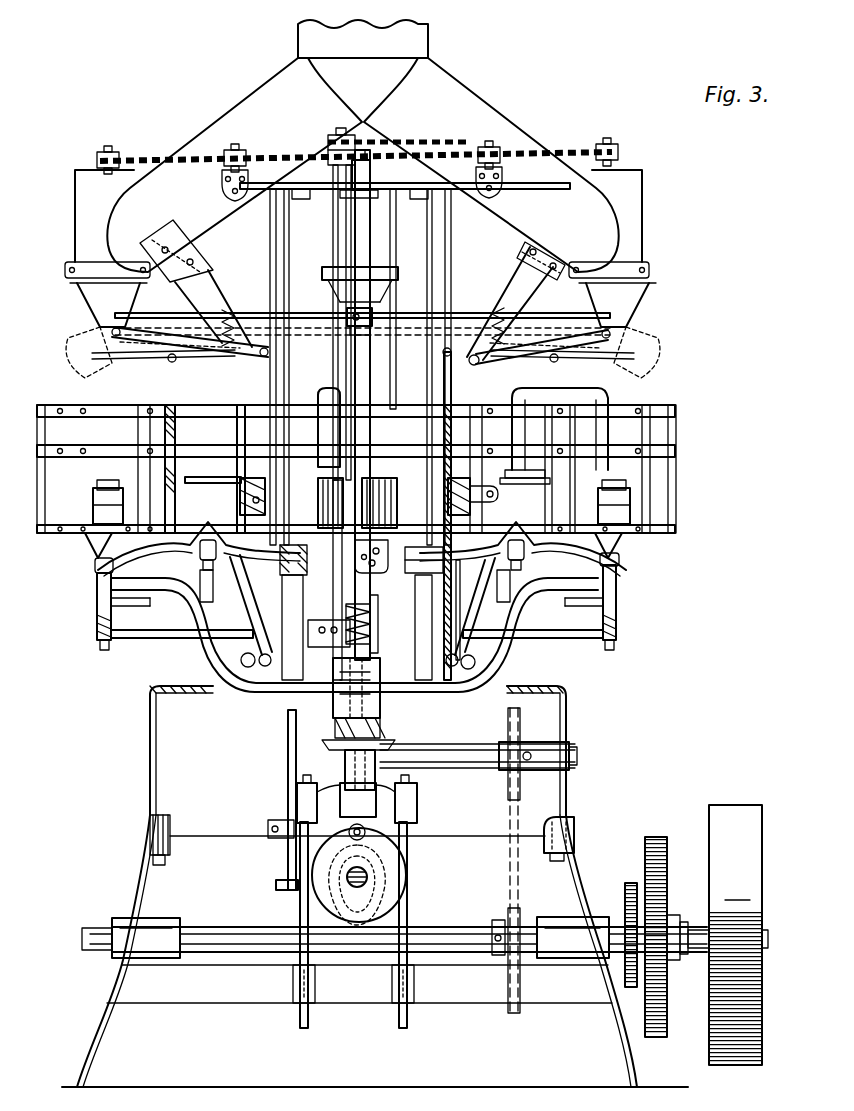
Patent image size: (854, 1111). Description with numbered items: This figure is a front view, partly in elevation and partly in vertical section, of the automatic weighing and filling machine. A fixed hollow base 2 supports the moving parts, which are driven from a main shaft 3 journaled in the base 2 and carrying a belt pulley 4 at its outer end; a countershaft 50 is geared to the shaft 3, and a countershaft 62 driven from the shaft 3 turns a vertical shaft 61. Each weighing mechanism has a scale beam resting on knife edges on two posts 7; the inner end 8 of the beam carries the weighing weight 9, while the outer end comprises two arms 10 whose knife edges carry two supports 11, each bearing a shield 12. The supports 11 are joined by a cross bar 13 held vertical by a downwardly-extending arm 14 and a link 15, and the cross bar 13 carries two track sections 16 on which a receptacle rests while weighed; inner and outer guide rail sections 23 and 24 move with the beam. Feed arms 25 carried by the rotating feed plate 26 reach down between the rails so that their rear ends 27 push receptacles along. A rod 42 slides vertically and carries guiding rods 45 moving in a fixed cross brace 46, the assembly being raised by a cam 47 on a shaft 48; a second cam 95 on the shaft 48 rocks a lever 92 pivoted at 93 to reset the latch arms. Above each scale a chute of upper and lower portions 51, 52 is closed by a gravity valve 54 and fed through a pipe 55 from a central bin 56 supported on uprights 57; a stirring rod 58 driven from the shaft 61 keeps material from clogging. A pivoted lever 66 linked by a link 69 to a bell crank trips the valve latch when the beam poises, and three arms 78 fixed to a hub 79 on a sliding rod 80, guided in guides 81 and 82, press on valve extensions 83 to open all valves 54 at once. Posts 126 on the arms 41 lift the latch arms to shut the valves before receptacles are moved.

The base 2 is at (570, 842).
The shaft 3 is at (452, 926).
The belt pulley 4 is at (738, 848).
The posts 7 is at (505, 590).
The inner end of the beam 8 is at (300, 545).
The weighing weight 9 is at (386, 516).
The arms 10 is at (160, 548).
The supports 11 is at (250, 694).
The shield 12 is at (90, 548).
The cross bar 13 is at (630, 540).
The downwardly-extending arm 14 is at (100, 620).
The link 15 is at (138, 641).
The track sections 16 is at (108, 490).
The inner guide rail section 23 is at (167, 407).
The outer guide rail section 24 is at (48, 407).
The arms 25 is at (330, 389).
The feed plate 26 is at (212, 476).
The rear end 27 is at (642, 470).
The arms 41 is at (375, 886).
The rod 42 is at (348, 768).
The guiding rods 45 is at (386, 800).
The cross brace 46 is at (360, 995).
The cam 47 is at (392, 868).
The shaft 48 is at (368, 877).
The countershaft 50 is at (688, 948).
The upper portion of the chute 51 is at (80, 220).
The lower portion of the chute 52 is at (92, 298).
The valve 54 is at (108, 372).
The connecting pipe 55 is at (362, 165).
The central bin 56 is at (412, 34).
The uprights 57 is at (284, 243).
The stirring rod 58 is at (112, 157).
The vertical shaft 61 is at (343, 302).
The countershaft 62 is at (520, 770).
The pivoted lever 66 is at (262, 362).
The link 69 is at (449, 400).
The arms 78 is at (249, 316).
The hub 79 is at (373, 318).
The rod 80 is at (362, 392).
The guide 81 is at (368, 180).
The guide 82 is at (345, 655).
The extension 83 is at (132, 338).
The lever 92 is at (288, 770).
The pivot 93 is at (280, 878).
The cam 95 is at (332, 916).
The post 126 is at (383, 648).